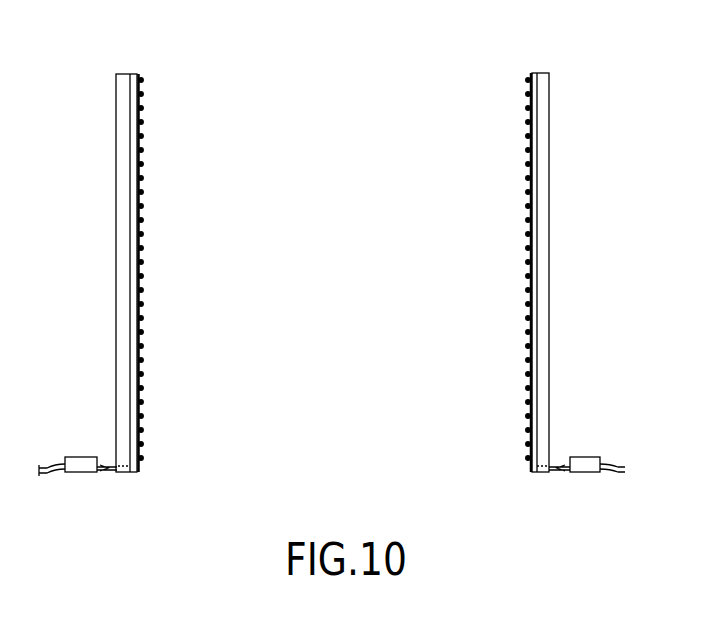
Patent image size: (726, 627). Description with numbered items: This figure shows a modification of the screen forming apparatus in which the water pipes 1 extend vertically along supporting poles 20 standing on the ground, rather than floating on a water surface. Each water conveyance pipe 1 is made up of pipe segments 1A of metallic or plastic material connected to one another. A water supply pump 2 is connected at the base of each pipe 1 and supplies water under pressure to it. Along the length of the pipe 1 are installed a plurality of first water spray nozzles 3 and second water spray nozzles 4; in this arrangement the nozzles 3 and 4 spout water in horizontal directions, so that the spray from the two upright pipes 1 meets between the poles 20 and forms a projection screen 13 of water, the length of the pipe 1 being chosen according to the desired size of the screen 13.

The water conveyance pipe 1 is at (133, 473).
The pipe segments 1A is at (130, 118).
The water supply pump 2 is at (84, 457).
The first water spray nozzles 3 is at (133, 83).
The second water spray nozzles 4 is at (133, 103).
The projection screen 13 is at (483, 297).
The supporting poles 20 is at (125, 340).